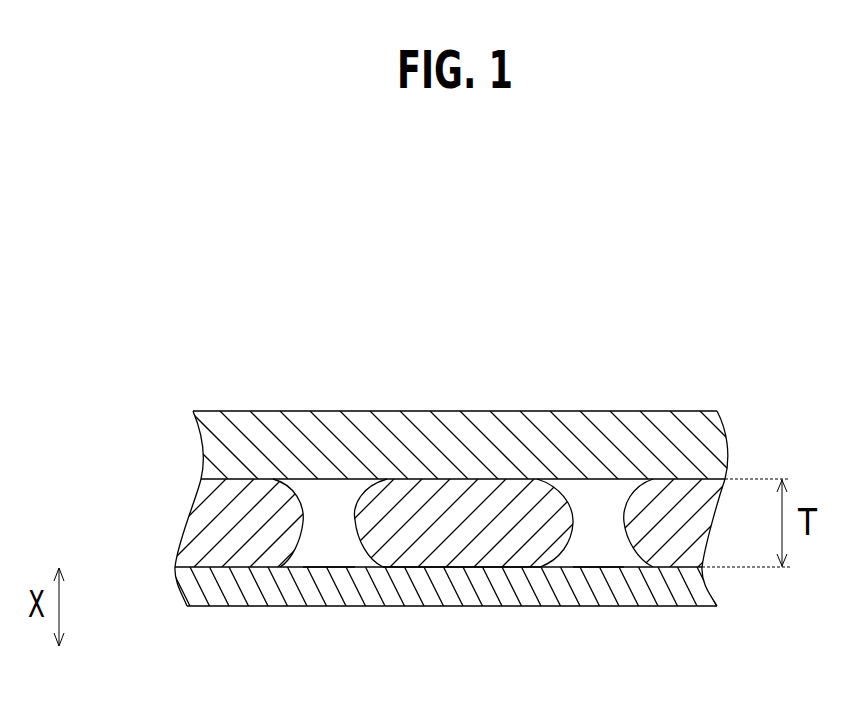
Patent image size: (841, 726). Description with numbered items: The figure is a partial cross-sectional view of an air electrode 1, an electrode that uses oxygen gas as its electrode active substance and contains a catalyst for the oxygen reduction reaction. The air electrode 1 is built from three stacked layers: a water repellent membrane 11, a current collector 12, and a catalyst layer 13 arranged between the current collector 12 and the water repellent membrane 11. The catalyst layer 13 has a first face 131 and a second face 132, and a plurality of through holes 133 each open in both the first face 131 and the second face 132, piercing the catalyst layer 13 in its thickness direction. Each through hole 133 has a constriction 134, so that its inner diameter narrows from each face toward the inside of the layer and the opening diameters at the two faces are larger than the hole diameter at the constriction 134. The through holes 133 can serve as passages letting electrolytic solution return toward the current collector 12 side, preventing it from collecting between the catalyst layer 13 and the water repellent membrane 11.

The air electrode 1 is at (222, 374).
The water repellent membrane 11 is at (220, 448).
The current collector 12 is at (220, 590).
The catalyst layer 13 is at (462, 458).
The first face 131 is at (457, 567).
The second face 132 is at (454, 479).
The through hole 133 is at (331, 513).
The constriction 134 is at (319, 540).